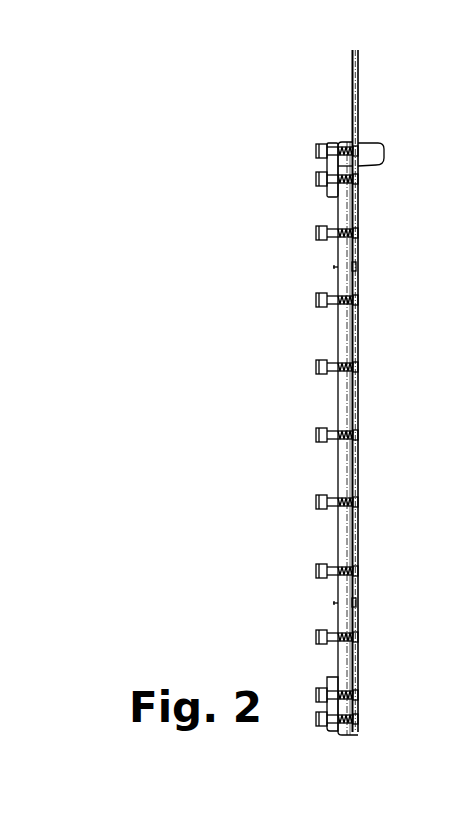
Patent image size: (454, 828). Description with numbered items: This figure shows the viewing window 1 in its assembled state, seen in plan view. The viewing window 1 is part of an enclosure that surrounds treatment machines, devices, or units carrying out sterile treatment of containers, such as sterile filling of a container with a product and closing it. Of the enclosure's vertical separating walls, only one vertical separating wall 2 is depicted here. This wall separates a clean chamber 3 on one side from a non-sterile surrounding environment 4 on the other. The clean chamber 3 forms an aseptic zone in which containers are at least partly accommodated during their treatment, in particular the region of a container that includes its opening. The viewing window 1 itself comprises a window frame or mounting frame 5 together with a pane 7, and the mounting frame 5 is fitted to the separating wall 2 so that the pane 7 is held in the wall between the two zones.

The viewing window 1 is at (212, 124).
The vertical separating wall 2 is at (358, 105).
The clean chamber 3 is at (402, 366).
The non-sterile surrounding environment 4 is at (226, 381).
The mounting frame 5 is at (353, 266).
The pane 7 is at (343, 457).